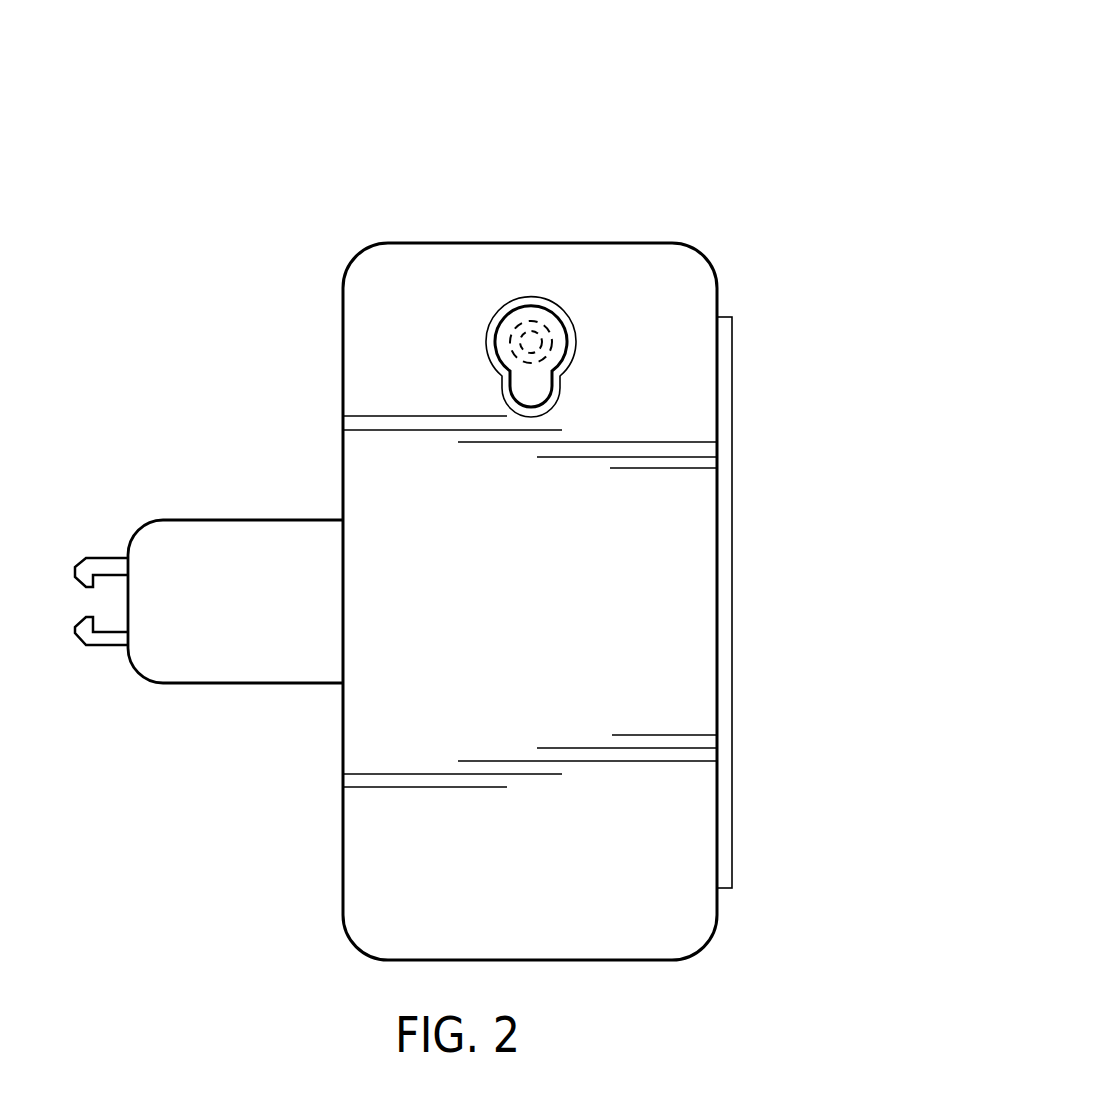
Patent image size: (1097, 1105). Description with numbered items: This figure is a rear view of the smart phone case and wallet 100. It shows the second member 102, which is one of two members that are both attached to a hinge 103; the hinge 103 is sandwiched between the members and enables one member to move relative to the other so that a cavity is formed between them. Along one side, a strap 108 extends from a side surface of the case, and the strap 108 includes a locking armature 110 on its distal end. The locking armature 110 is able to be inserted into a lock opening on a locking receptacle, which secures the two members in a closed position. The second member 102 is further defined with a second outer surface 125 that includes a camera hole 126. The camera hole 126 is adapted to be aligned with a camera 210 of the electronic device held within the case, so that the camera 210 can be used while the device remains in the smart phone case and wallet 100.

The smart phone case and wallet 100 is at (706, 127).
The second member 102 is at (717, 288).
The hinge 103 is at (732, 328).
The strap 108 is at (270, 520).
The locking armature 110 is at (107, 557).
The second outer surface 125 is at (633, 283).
The camera hole 126 is at (497, 333).
The camera 210 is at (530, 335).